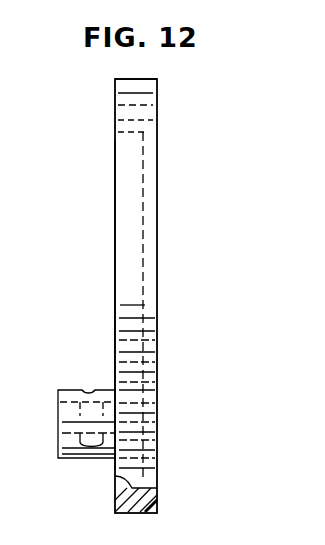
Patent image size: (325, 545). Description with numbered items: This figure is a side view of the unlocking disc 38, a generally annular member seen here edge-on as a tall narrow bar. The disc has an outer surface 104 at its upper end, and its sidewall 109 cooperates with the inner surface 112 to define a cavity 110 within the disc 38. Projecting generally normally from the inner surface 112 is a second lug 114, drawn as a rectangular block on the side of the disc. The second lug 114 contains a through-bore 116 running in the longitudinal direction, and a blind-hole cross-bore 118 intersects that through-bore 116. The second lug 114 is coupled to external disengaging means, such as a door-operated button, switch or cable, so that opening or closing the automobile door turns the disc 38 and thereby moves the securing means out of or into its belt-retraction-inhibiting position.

The unlocking disc 38 is at (226, 123).
The outer surface 104 is at (157, 92).
The sidewall 109 is at (115, 92).
The cavity 110 is at (130, 233).
The inner surface 112 is at (143, 155).
The second lug 114 is at (72, 458).
The through-bore 116 is at (58, 420).
The blind-hole cross-bore 118 is at (90, 386).